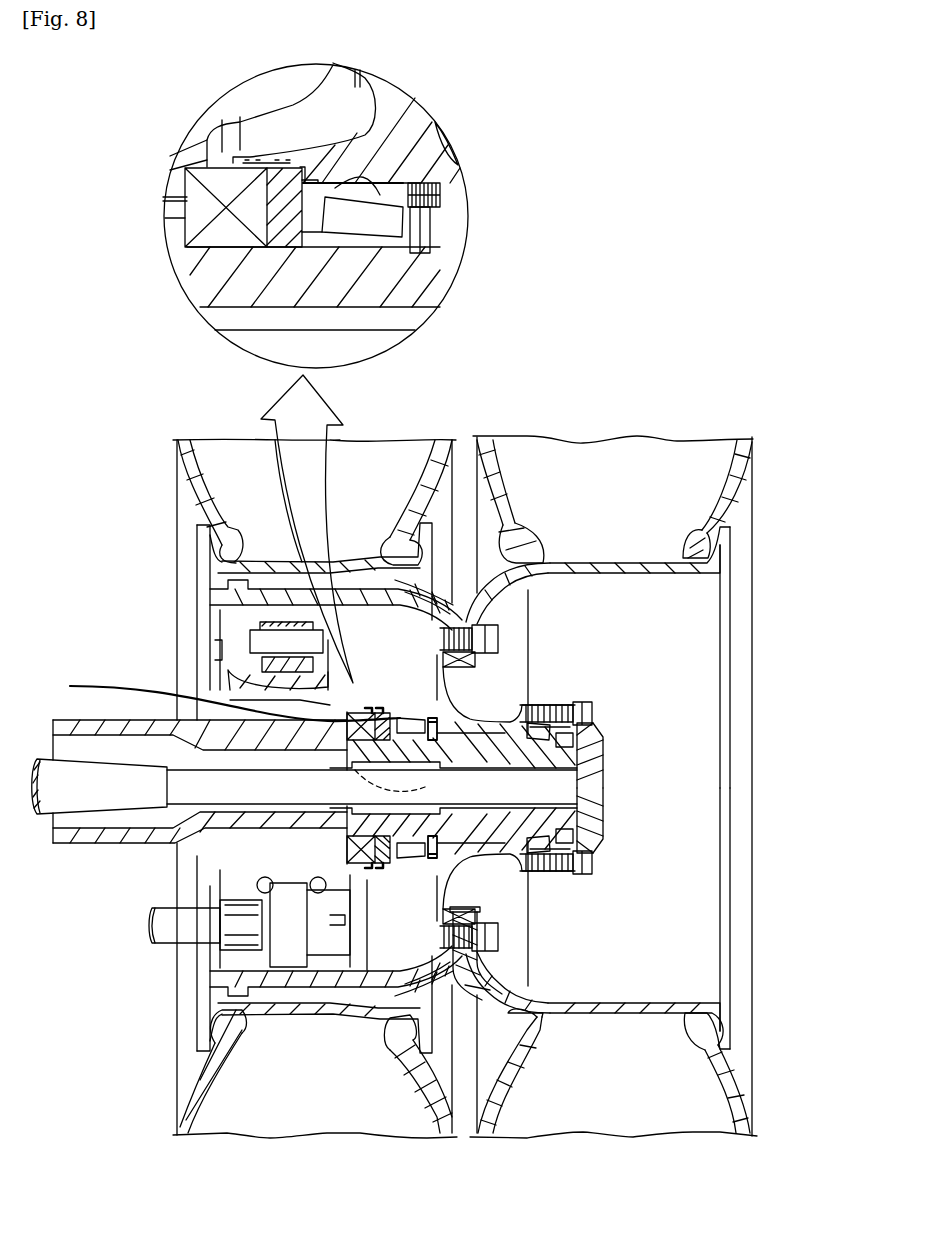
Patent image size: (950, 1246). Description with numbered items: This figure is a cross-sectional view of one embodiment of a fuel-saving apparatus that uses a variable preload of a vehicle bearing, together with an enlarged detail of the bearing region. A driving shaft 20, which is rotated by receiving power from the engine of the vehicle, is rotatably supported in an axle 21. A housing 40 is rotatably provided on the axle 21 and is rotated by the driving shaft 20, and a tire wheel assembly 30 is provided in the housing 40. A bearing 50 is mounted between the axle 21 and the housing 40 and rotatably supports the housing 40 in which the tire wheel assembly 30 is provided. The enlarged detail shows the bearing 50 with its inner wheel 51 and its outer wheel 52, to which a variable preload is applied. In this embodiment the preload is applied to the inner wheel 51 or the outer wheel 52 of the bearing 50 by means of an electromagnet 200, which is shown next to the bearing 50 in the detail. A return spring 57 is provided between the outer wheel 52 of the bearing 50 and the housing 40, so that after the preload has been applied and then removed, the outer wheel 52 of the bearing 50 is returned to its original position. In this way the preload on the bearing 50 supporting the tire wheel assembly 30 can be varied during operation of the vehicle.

The driving shaft 20 is at (80, 805).
The axle 21 is at (135, 845).
The tire wheel assembly 30 is at (461, 438).
The housing 40 is at (445, 693).
The bearing 50 is at (492, 514).
The inner wheel 51 is at (367, 230).
The outer wheel 52 is at (397, 200).
The return spring 57 is at (430, 193).
The electromagnet 200 is at (200, 190).